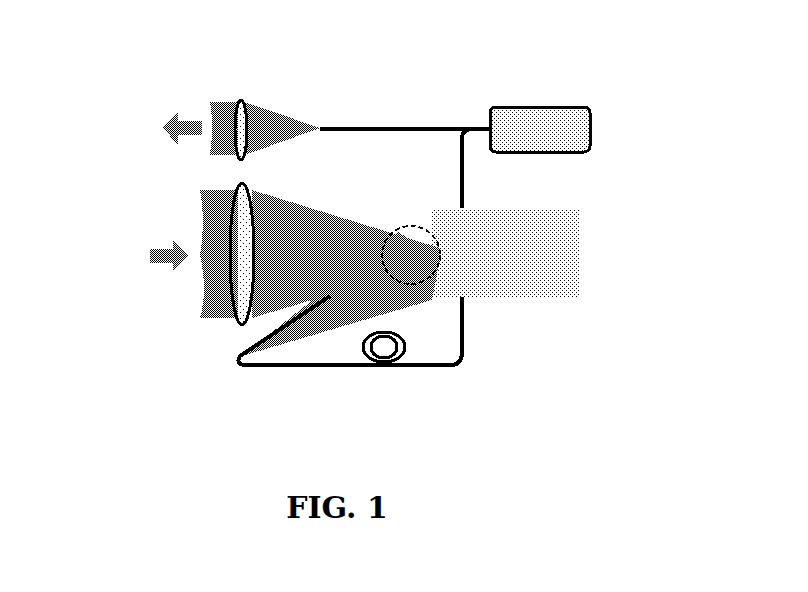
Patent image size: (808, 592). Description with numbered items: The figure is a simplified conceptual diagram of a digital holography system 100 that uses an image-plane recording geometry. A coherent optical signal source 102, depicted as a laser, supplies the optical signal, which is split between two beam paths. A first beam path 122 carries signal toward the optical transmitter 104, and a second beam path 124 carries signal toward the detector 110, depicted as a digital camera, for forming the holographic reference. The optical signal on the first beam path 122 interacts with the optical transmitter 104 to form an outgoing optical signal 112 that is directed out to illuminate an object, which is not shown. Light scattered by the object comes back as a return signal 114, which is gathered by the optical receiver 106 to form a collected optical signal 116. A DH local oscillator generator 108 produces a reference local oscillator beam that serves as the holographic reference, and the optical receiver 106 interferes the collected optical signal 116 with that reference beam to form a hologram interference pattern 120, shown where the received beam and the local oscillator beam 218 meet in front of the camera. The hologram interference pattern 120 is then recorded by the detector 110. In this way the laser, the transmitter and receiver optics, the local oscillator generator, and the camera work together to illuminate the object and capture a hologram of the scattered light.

The digital holography system 100 is at (432, 230).
The coherent optical signal source 102 is at (567, 130).
The optical transmitter 104 is at (298, 121).
The optical receiver 106 is at (192, 258).
The DH local oscillator generator 108 is at (350, 346).
The detector 110 is at (539, 239).
The outgoing optical signal 112 is at (143, 124).
The return signal 114 is at (130, 249).
The collected optical signal 116 is at (346, 251).
The hologram interference pattern 120 is at (397, 214).
The first beam path 122 is at (405, 114).
The second beam path 124 is at (500, 168).
The DH local oscillator beam 218 is at (347, 294).